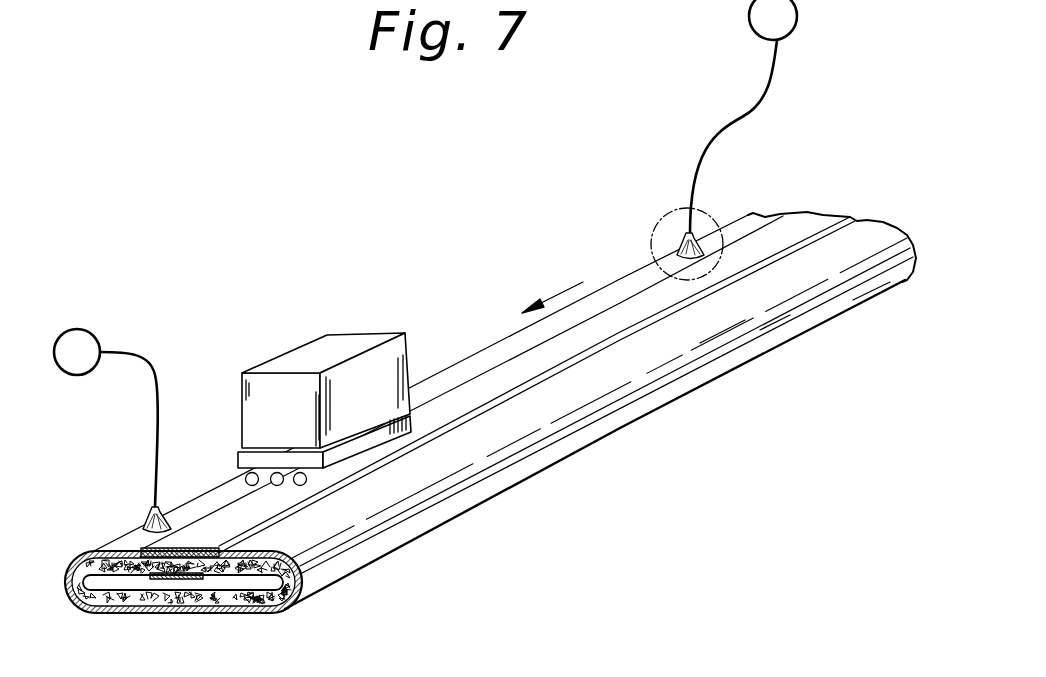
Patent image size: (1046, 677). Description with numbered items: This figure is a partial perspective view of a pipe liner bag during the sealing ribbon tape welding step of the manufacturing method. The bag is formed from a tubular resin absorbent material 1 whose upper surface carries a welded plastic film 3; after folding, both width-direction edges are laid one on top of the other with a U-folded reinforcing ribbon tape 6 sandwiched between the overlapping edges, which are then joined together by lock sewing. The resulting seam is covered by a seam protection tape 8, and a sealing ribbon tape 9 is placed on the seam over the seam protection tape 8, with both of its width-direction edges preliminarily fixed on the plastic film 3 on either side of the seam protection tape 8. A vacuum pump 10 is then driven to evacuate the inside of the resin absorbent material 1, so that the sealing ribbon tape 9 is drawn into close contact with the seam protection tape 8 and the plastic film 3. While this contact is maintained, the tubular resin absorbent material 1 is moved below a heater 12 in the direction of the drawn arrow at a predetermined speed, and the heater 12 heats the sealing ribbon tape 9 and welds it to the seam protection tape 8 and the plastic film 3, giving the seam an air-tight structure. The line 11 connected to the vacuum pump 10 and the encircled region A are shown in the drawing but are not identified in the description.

The resin absorbent material 1 is at (243, 598).
The plastic film 3 is at (100, 549).
The reinforcing ribbon tape 6 is at (177, 580).
The seam protection tape 8 is at (131, 575).
The sealing ribbon tape 9 is at (225, 518).
The vacuum pump 10 is at (94, 335).
The hose / nozzle line 11 is at (157, 435).
The heater 12 is at (397, 359).
The detail circle A is at (712, 217).